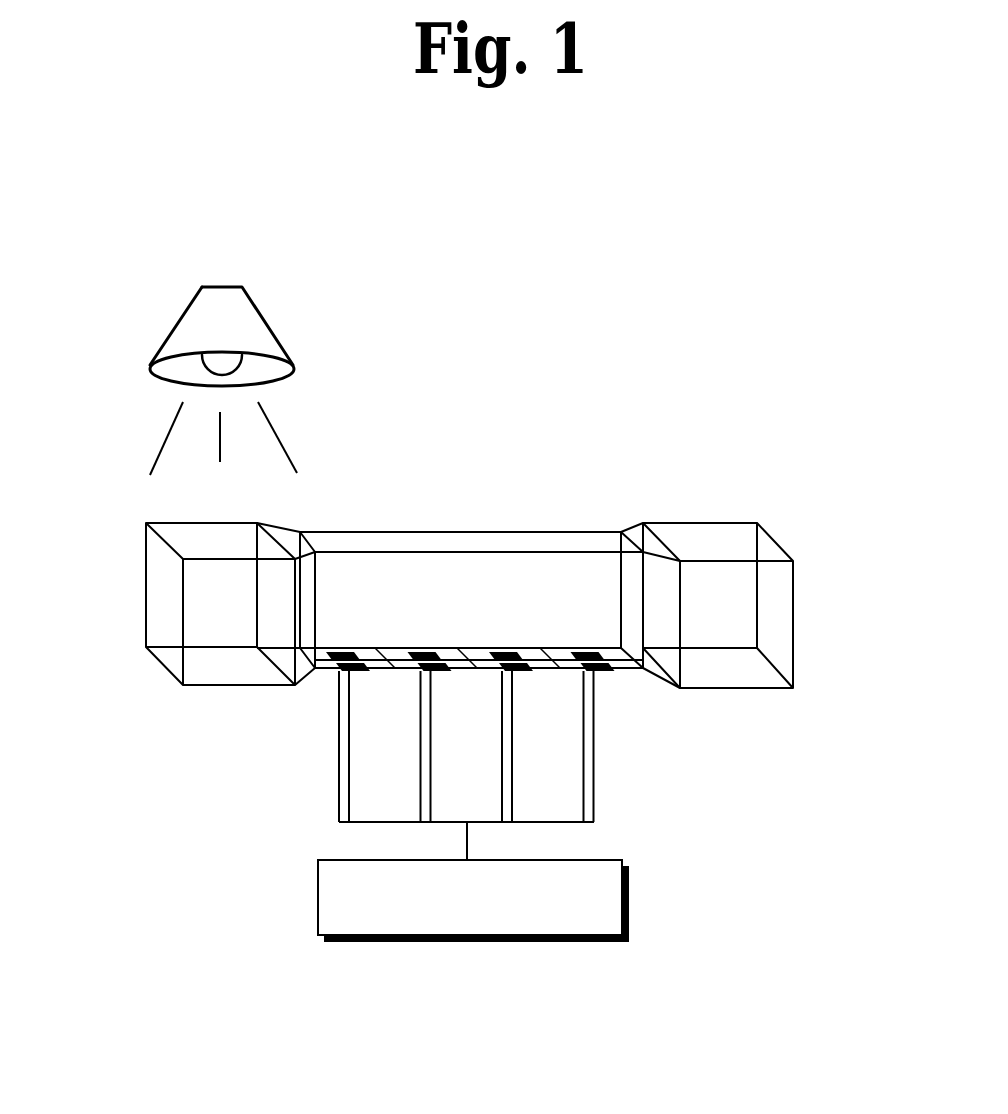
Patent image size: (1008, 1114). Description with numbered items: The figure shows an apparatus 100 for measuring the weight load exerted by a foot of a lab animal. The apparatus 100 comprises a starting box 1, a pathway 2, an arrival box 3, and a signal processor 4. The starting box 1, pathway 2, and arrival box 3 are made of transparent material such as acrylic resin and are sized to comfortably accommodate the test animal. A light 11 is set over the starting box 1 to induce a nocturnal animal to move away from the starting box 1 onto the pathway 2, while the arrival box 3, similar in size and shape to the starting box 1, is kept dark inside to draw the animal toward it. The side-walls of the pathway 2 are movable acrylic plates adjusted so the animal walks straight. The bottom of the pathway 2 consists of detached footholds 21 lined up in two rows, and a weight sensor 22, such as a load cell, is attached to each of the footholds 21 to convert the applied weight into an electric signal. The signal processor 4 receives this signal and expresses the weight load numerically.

The apparatus 100 is at (457, 591).
The starting box 1 is at (146, 543).
The pathway 2 is at (436, 532).
The arrival box 3 is at (777, 542).
The signal processor 4 is at (632, 905).
The light 11 is at (263, 317).
The footholds 21 is at (562, 672).
The weight sensor 22 is at (617, 670).